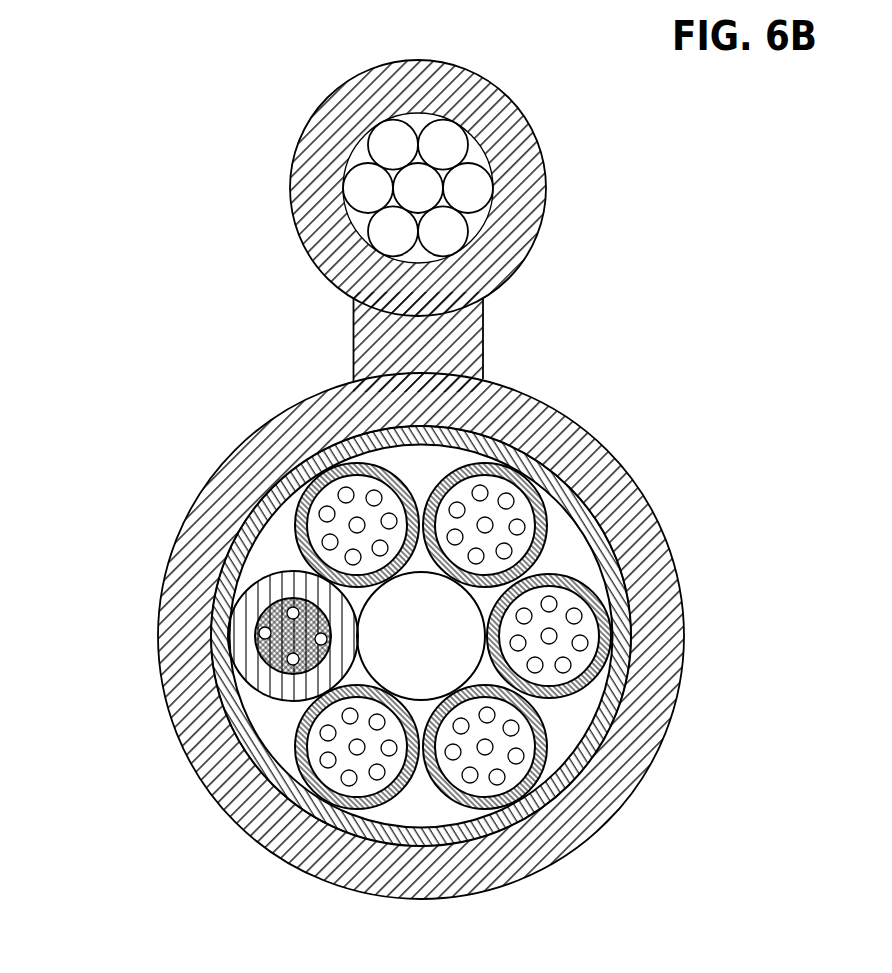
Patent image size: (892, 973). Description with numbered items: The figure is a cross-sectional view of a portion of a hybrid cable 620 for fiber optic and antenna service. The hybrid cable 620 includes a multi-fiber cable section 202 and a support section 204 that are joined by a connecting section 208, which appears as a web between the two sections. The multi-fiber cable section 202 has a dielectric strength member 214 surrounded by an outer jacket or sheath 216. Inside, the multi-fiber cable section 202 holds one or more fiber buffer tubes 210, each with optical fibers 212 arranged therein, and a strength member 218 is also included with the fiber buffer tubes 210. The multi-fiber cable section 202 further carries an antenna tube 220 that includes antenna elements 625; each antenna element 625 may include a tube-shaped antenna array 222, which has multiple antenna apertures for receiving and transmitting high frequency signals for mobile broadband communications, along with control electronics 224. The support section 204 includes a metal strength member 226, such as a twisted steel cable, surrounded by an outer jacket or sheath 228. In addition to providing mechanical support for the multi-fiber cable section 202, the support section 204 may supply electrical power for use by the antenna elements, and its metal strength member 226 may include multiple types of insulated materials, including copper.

The hybrid cable 620 is at (122, 35).
The multi-fiber cable section 202 is at (627, 432).
The support section 204 is at (562, 193).
The connecting section 208 is at (483, 355).
The fiber buffer tube 210 is at (290, 530).
The optical fiber 212 is at (300, 478).
The dielectric strength member 214 is at (285, 795).
The outer jacket or sheath 216 is at (235, 445).
The strength member 218 is at (473, 673).
The antenna tube 220 is at (288, 790).
The tube-shaped antenna array 222 is at (257, 667).
The control electronics 224 is at (277, 703).
The metal strength member 226 is at (347, 205).
The outer jacket or sheath 228 is at (291, 171).
The antenna element 625 is at (257, 570).